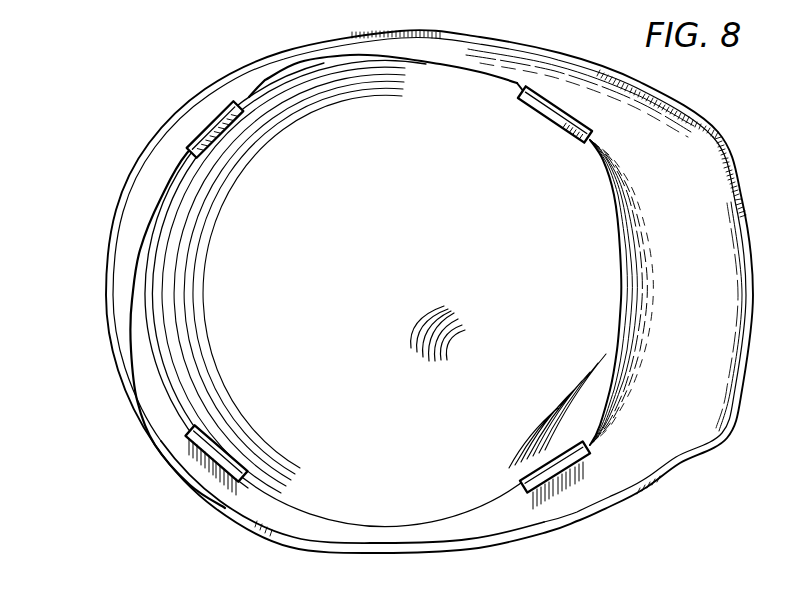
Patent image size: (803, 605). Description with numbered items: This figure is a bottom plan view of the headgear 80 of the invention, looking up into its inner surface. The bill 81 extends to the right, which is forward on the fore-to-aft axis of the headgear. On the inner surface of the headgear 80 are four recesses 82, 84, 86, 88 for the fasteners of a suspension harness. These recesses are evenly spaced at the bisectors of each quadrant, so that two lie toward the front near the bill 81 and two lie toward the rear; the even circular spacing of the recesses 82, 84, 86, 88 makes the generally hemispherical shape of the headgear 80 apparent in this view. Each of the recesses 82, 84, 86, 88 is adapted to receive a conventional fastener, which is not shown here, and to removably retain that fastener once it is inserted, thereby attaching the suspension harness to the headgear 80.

The headgear 80 is at (168, 96).
The bill 81 is at (693, 390).
The recess 82 is at (586, 446).
The recess 84 is at (198, 421).
The recess 86 is at (204, 163).
The recess 88 is at (552, 118).